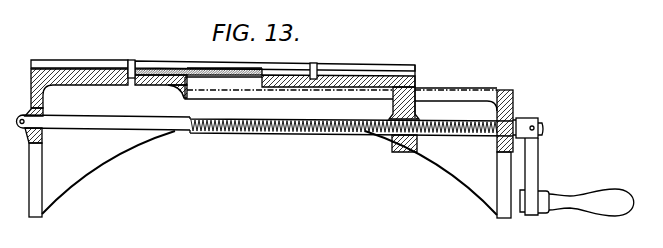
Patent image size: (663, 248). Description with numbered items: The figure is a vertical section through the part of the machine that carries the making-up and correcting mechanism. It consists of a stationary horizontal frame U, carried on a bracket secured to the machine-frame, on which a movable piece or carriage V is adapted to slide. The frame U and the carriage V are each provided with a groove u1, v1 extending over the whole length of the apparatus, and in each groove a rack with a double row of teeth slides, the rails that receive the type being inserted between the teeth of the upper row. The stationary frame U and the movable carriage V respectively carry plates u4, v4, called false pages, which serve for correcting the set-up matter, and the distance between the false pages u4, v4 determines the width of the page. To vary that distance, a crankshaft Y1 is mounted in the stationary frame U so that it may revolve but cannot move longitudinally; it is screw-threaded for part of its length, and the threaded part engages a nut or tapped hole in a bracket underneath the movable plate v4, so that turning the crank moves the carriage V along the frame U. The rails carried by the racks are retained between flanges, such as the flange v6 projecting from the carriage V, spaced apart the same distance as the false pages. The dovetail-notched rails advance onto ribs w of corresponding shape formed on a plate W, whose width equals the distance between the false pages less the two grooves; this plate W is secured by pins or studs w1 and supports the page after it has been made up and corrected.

The stationary horizontal frame U is at (466, 95).
The groove u1 is at (178, 89).
The false page u4 is at (42, 60).
The movable piece or carriage V is at (337, 90).
The groove v1 is at (313, 66).
The false page v4 is at (378, 66).
The flange v6 is at (415, 150).
The plate W is at (208, 70).
The ribs w is at (167, 73).
The pins or studs w1 is at (132, 67).
The crankshaft Y1 is at (298, 131).